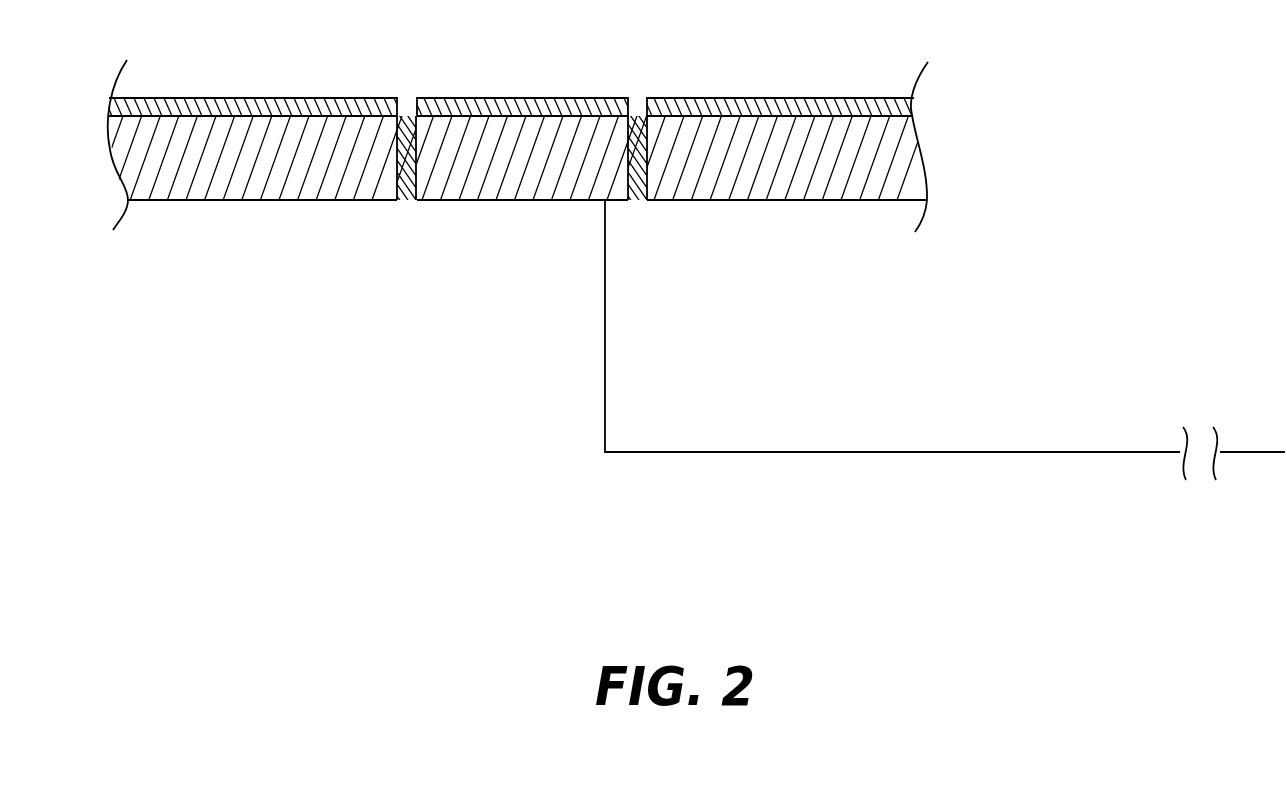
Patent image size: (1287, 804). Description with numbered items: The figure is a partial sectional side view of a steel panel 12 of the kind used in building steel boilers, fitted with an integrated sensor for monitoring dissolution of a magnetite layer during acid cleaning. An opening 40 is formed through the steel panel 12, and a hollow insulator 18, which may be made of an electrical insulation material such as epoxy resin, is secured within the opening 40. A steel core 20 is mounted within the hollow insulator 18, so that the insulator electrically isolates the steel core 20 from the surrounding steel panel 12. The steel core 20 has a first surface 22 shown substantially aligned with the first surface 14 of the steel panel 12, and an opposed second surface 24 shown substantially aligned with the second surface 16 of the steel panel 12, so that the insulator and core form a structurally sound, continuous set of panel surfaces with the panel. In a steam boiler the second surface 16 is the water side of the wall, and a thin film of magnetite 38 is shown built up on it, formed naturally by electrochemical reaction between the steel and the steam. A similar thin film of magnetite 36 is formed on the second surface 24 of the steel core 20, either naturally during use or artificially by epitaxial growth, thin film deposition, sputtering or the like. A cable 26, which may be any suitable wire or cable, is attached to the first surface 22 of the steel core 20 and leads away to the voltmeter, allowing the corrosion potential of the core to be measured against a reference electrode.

The steel panel 12 is at (167, 200).
The first surface 14 is at (825, 201).
The second surface 16 is at (903, 120).
The hollow insulator 18 is at (408, 116).
The steel core 20 is at (433, 200).
The first surface 22 is at (517, 200).
The second surface 24 is at (462, 116).
The cable 26 is at (785, 452).
The layer of magnetite 36 is at (589, 99).
The thin film of magnetite 38 is at (217, 99).
The opening 40 is at (398, 183).